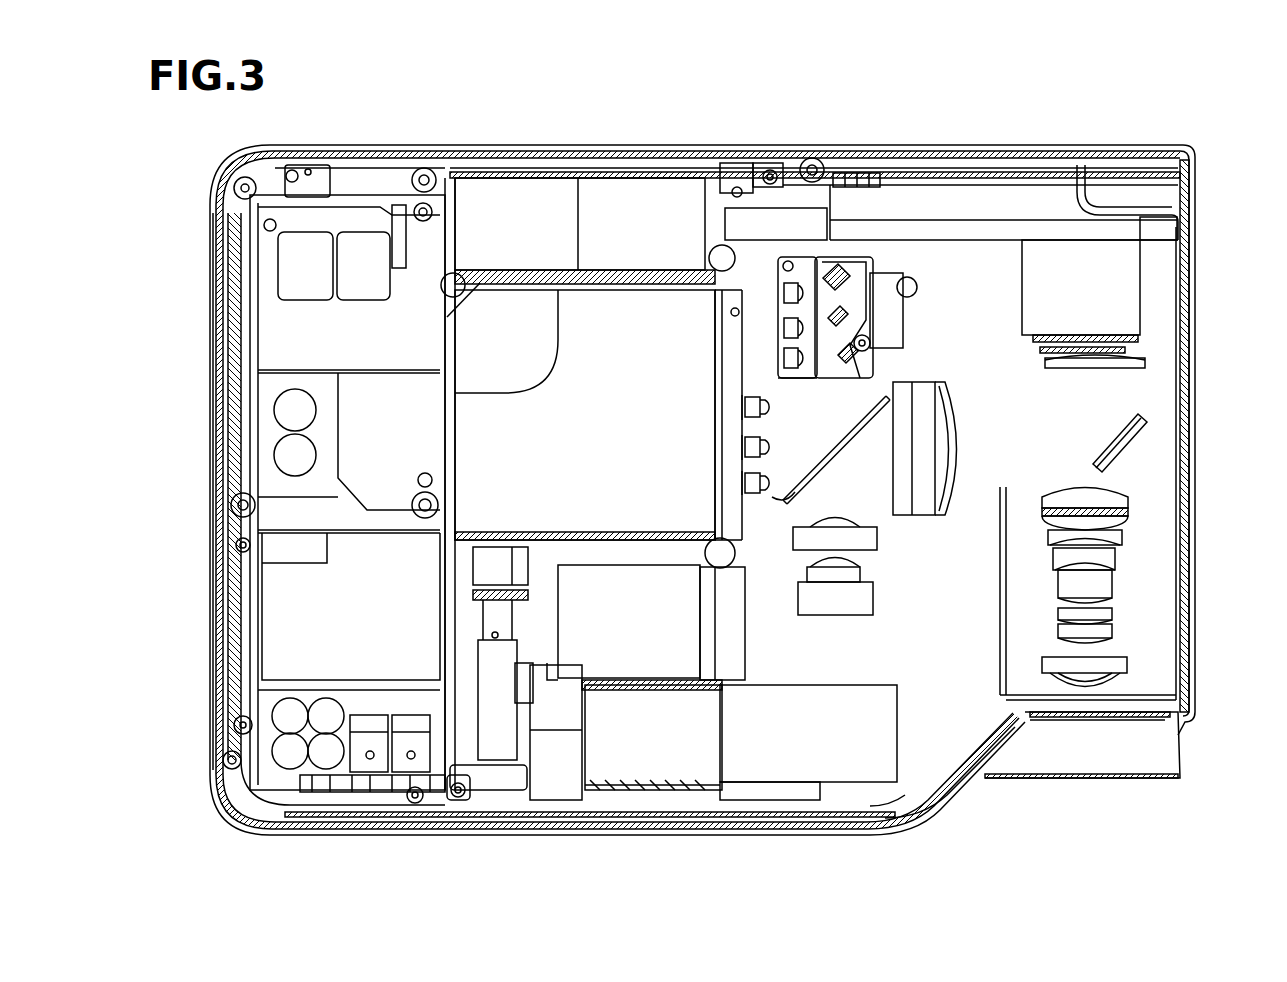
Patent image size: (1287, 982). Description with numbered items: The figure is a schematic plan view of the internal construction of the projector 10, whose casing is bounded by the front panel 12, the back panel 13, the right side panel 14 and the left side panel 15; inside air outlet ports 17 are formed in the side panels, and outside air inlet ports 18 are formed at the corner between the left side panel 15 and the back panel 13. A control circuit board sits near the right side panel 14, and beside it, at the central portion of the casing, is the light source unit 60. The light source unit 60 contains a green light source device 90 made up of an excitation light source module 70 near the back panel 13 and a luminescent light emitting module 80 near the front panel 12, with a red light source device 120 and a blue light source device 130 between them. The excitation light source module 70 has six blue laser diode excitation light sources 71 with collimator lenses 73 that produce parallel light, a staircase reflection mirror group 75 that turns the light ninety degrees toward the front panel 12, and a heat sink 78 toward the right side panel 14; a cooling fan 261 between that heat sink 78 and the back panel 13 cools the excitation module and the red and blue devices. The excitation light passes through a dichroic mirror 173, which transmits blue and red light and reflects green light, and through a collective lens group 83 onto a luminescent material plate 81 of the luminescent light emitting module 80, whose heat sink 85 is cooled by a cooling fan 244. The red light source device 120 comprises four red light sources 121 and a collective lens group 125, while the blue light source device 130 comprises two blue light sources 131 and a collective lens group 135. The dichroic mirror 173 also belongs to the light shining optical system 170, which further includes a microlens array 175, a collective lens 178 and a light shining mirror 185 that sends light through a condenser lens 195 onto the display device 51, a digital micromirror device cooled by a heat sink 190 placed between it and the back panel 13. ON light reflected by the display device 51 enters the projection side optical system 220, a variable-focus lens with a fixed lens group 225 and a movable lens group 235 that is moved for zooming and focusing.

The projector 10 is at (1205, 143).
The front panel 12 is at (355, 833).
The back panel 13 is at (598, 270).
The right side panel 14 is at (225, 348).
The left side panel 15 is at (1182, 650).
The inside air outlet ports 17 is at (235, 390).
The outside air inlet ports 18 is at (516, 152).
The display device 51 is at (1110, 336).
The light source unit 60 is at (876, 632).
The excitation light source module 70 is at (751, 303).
The excitation light sources 71 is at (780, 365).
The collimator lenses 73 is at (777, 350).
The reflection mirror group 75 is at (842, 222).
The heat sink 78 is at (613, 312).
The luminescent light emitting module 80 is at (830, 611).
The luminescent material plate 81 is at (833, 592).
The collective lens group 83 is at (884, 540).
The heat sink 85 is at (833, 600).
The green light source device 90 is at (832, 737).
The red light source device 120 is at (745, 408).
The red light sources 121 is at (737, 408).
The collective lens group 125 is at (777, 407).
The blue light source device 130 is at (742, 450).
The blue light sources 131 is at (737, 449).
The collective lens group 135 is at (777, 446).
The light shining optical system 170 is at (947, 388).
The dichroic mirror 173 is at (842, 450).
The microlens array 175 is at (930, 508).
The collective lens 178 is at (968, 438).
The light shining mirror 185 is at (1133, 445).
The heat sink 190 is at (1073, 268).
The condenser lens 195 is at (1113, 360).
The projection side optical system 220 is at (1133, 657).
The fixed lens group 225 is at (1123, 685).
The movable lens group 235 is at (1142, 558).
The cooling fan 244 is at (752, 725).
The cooling fan 261 is at (472, 215).